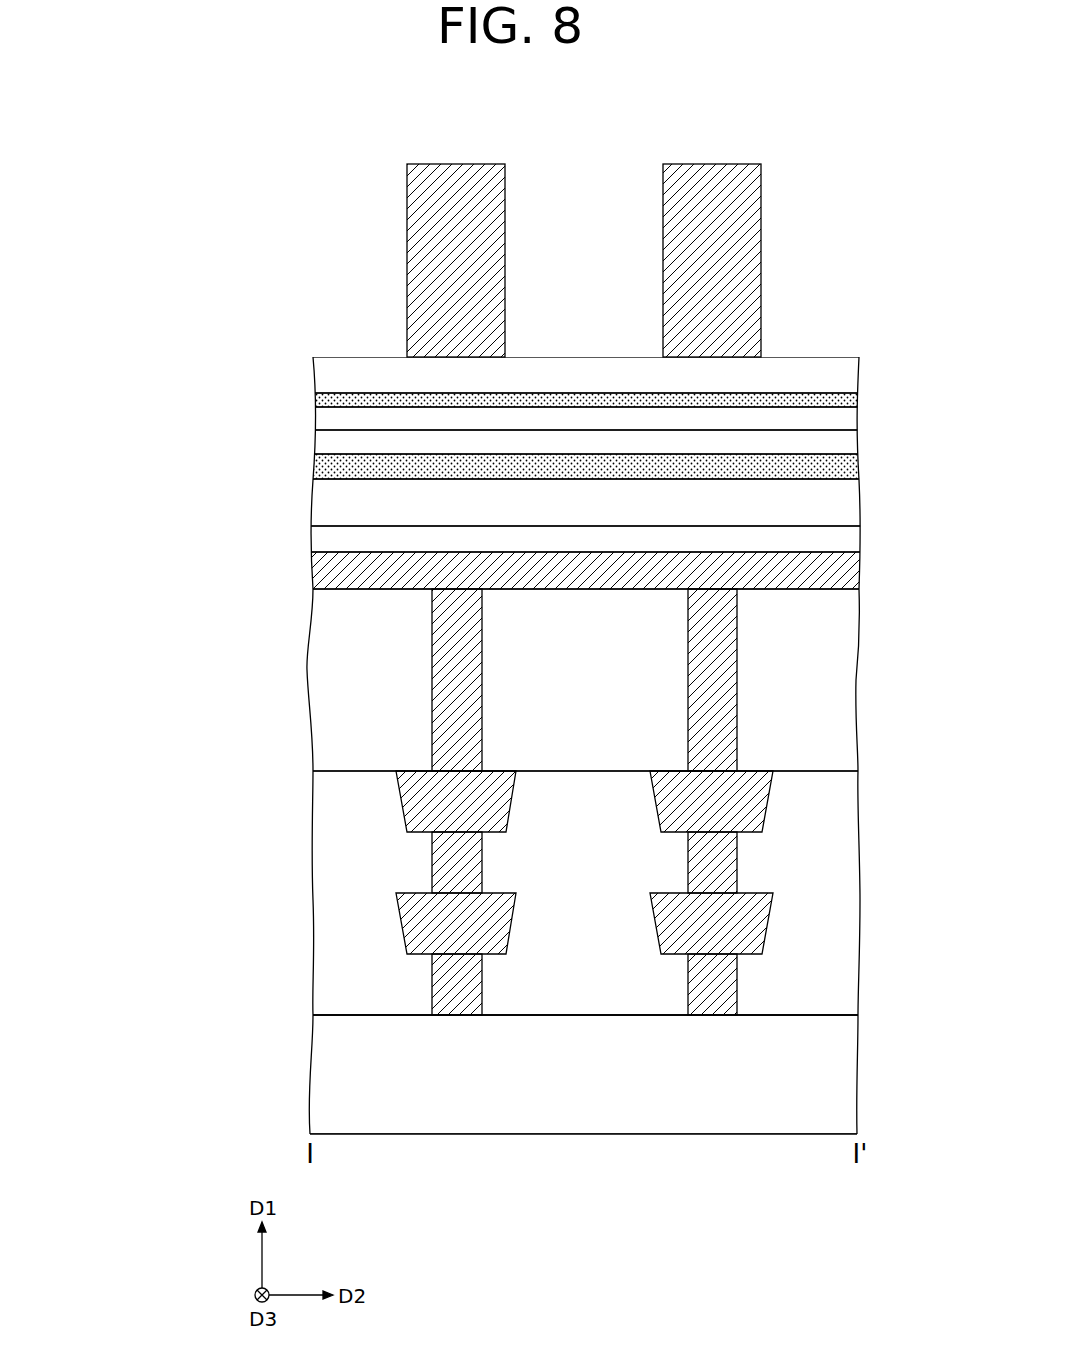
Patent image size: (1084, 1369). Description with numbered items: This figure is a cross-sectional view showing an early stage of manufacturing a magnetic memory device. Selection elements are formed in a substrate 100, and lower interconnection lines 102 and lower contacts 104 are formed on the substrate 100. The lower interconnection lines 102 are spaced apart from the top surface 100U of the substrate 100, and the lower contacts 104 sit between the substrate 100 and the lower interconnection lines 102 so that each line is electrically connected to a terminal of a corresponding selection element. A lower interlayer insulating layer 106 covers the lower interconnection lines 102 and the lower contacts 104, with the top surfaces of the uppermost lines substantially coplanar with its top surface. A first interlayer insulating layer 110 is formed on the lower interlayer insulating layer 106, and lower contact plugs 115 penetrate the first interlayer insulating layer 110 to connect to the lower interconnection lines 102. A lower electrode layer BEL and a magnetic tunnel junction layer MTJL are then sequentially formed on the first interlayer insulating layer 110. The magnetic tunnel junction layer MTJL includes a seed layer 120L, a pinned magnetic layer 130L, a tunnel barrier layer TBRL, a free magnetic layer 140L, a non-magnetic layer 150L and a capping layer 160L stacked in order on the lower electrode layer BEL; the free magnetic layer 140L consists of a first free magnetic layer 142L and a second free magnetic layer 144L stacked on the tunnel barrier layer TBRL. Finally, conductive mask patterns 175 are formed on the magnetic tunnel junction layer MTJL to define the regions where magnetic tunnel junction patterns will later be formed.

The conductive mask patterns 175 is at (413, 252).
The magnetic tunnel junction layer MTJL is at (125, 372).
The capping layer 160L is at (321, 372).
The non-magnetic layer 150L is at (321, 400).
The free magnetic layer 140L is at (198, 413).
The second free magnetic layer 144L is at (321, 418).
The first free magnetic layer 142L is at (321, 445).
The tunnel barrier layer TBRL is at (322, 467).
The pinned magnetic layer 130L is at (321, 510).
The seed layer 120L is at (321, 540).
The lower electrode layer BEL is at (323, 568).
The first interlayer insulating layer 110 is at (846, 686).
The lower contact plugs 115 is at (726, 729).
The lower interlayer insulating layer 106 is at (848, 892).
The lower interconnection lines 102 is at (760, 800).
The lower contacts 104 is at (738, 850).
The top surface of the substrate 100U is at (342, 1014).
The substrate 100 is at (845, 1072).